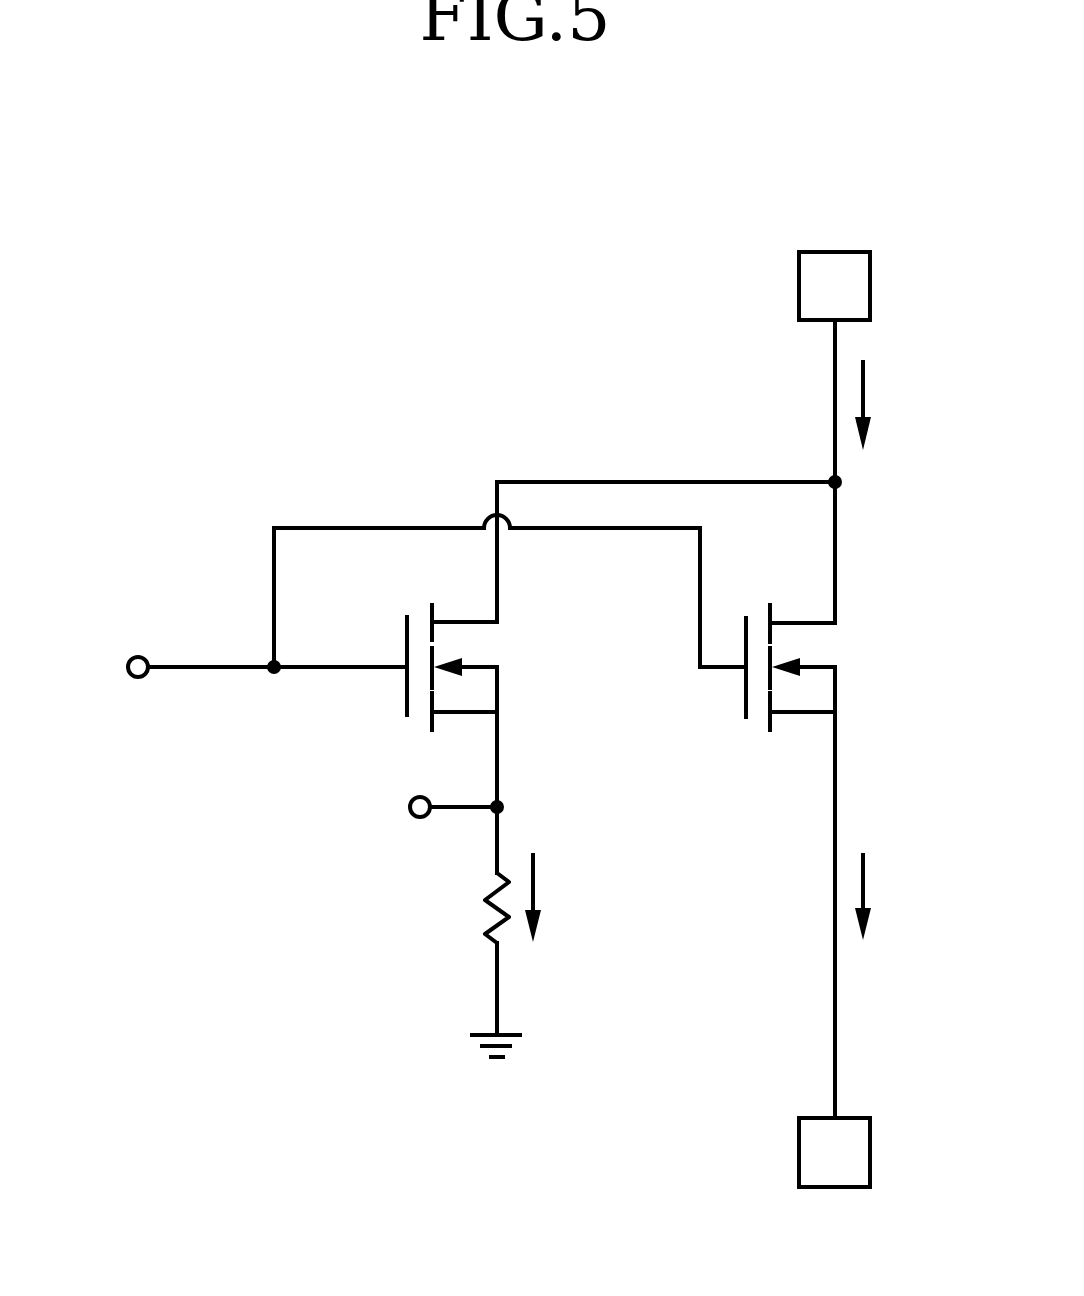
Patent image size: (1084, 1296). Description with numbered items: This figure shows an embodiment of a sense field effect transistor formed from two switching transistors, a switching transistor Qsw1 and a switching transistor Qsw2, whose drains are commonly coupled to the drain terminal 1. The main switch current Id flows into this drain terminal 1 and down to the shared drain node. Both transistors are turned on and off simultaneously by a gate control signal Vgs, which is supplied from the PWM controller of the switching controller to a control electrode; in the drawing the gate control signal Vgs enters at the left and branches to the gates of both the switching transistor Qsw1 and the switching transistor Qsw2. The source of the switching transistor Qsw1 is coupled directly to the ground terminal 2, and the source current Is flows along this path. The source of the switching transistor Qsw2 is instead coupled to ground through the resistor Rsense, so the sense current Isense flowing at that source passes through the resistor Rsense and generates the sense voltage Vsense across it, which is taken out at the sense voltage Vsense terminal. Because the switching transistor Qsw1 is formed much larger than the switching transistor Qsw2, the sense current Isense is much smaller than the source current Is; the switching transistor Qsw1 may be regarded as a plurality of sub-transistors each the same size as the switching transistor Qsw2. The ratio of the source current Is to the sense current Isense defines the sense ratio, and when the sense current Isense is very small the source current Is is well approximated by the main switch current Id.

The drain terminal 1 is at (837, 263).
The ground GND terminal 2 is at (834, 1182).
The switching transistor Qsw1 is at (846, 667).
The switching transistor Qsw2 is at (501, 667).
The resistor Rsense is at (434, 915).
The gate control signal Vgs is at (235, 667).
The sense voltage Vsense is at (395, 807).
The main switch current Id is at (885, 405).
The source current Is is at (883, 896).
The sense current Isense is at (583, 897).